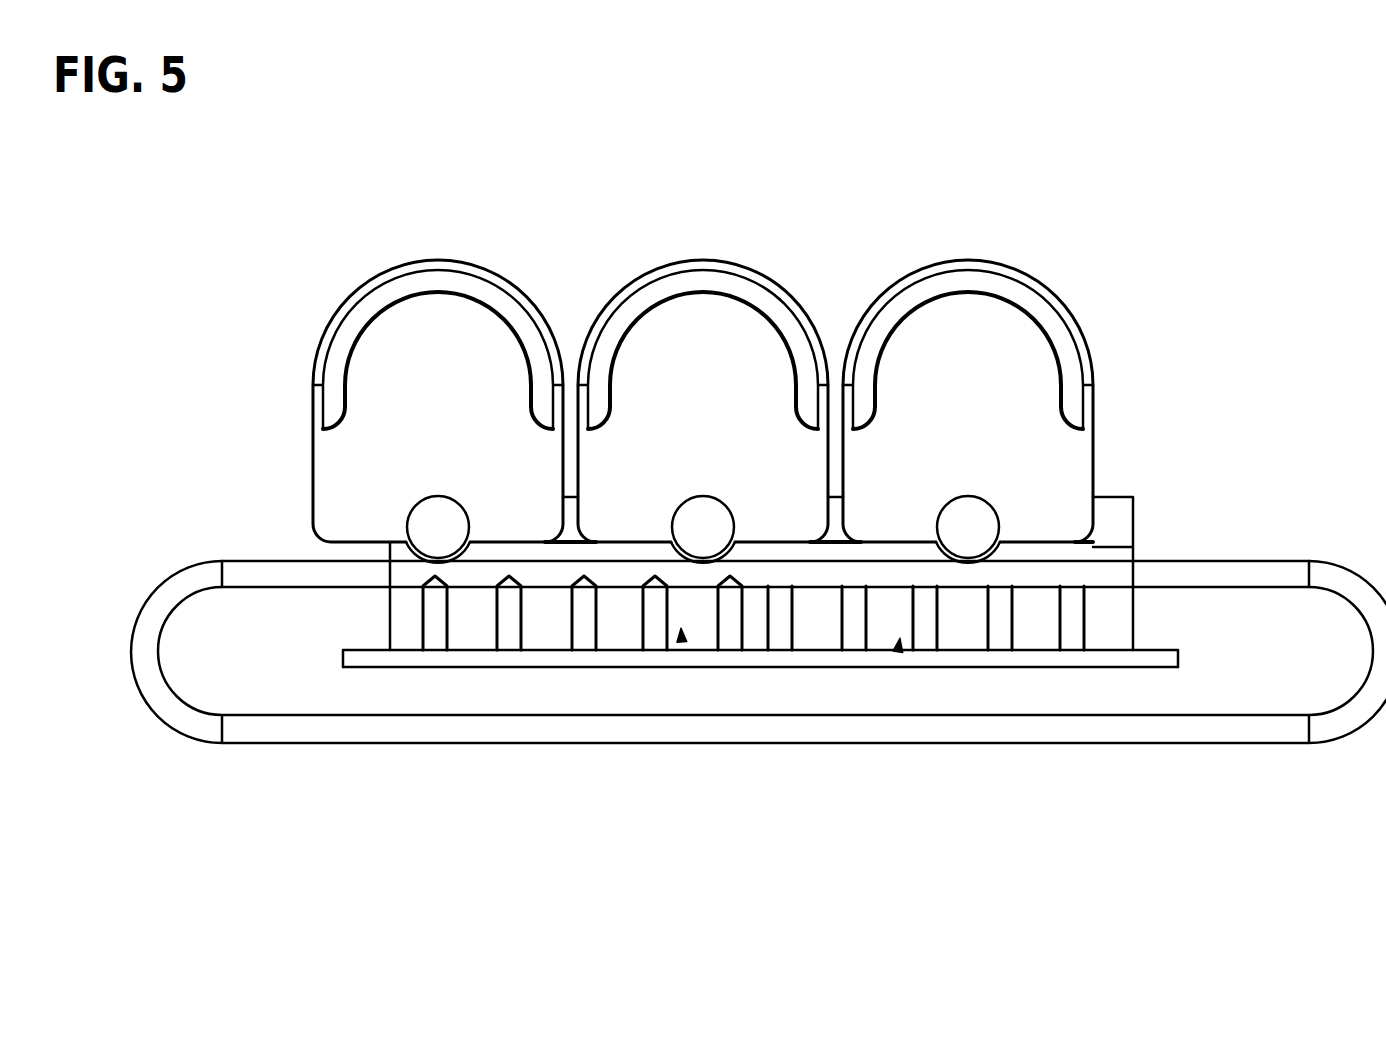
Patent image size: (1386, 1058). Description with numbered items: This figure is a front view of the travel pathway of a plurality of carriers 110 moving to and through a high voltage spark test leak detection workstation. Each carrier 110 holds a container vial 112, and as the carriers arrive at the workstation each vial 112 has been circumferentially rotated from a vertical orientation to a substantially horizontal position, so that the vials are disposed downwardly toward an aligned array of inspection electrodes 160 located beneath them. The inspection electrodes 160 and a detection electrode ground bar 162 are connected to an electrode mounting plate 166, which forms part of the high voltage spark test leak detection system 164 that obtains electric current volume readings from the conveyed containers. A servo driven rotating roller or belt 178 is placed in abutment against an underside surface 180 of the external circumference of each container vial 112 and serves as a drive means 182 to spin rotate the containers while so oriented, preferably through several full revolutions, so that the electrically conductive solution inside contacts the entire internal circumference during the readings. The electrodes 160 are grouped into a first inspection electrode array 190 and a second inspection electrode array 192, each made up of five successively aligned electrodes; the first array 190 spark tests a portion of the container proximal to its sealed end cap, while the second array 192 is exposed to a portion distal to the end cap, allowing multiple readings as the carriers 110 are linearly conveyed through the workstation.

The carrier 110 is at (945, 375).
The container vial 112 is at (427, 527).
The inspection electrode 160 is at (513, 632).
The detection electrode ground bar 162 is at (1118, 513).
The high voltage spark test leak detection system 164 is at (1145, 668).
The electrode mounting plate 166 is at (1180, 665).
The servo driven rotating roller or belt 178 is at (290, 566).
The underside surface 180 is at (438, 556).
The drive means 182 is at (296, 766).
The first inspection electrode array 190 is at (682, 642).
The second inspection electrode array 192 is at (898, 652).